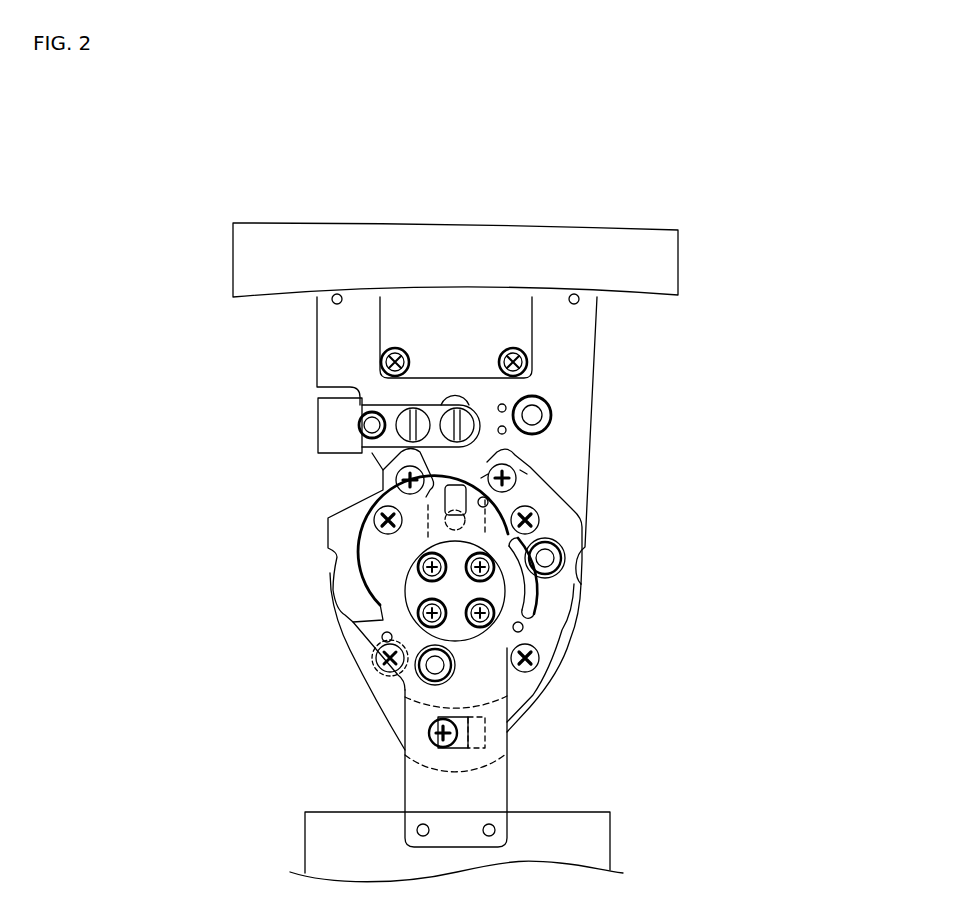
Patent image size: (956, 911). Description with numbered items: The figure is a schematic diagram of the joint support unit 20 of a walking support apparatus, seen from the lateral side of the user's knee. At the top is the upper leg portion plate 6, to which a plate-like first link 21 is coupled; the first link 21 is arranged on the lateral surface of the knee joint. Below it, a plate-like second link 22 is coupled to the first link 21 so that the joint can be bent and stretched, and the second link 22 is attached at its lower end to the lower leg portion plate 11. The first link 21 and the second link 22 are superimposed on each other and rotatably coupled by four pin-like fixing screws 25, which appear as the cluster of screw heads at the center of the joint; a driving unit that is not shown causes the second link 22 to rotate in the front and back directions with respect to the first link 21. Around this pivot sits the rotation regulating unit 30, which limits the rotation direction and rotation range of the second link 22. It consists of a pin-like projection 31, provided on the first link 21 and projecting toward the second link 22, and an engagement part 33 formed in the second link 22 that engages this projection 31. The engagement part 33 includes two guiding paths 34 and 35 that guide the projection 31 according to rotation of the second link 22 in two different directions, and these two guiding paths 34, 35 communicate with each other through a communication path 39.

The upper leg portion plate 6 is at (551, 240).
The lower leg portion plate 11 is at (590, 853).
The joint support unit 20 is at (518, 570).
The first link 21 is at (593, 380).
The second link 22 is at (512, 768).
The fixing screws 25 is at (427, 592).
The rotation regulating unit 30 is at (542, 630).
The projection 31 is at (427, 505).
The engagement part 33 is at (382, 553).
The guiding path 34 is at (371, 578).
The guiding path 35 is at (547, 600).
The communication path 39 is at (480, 506).